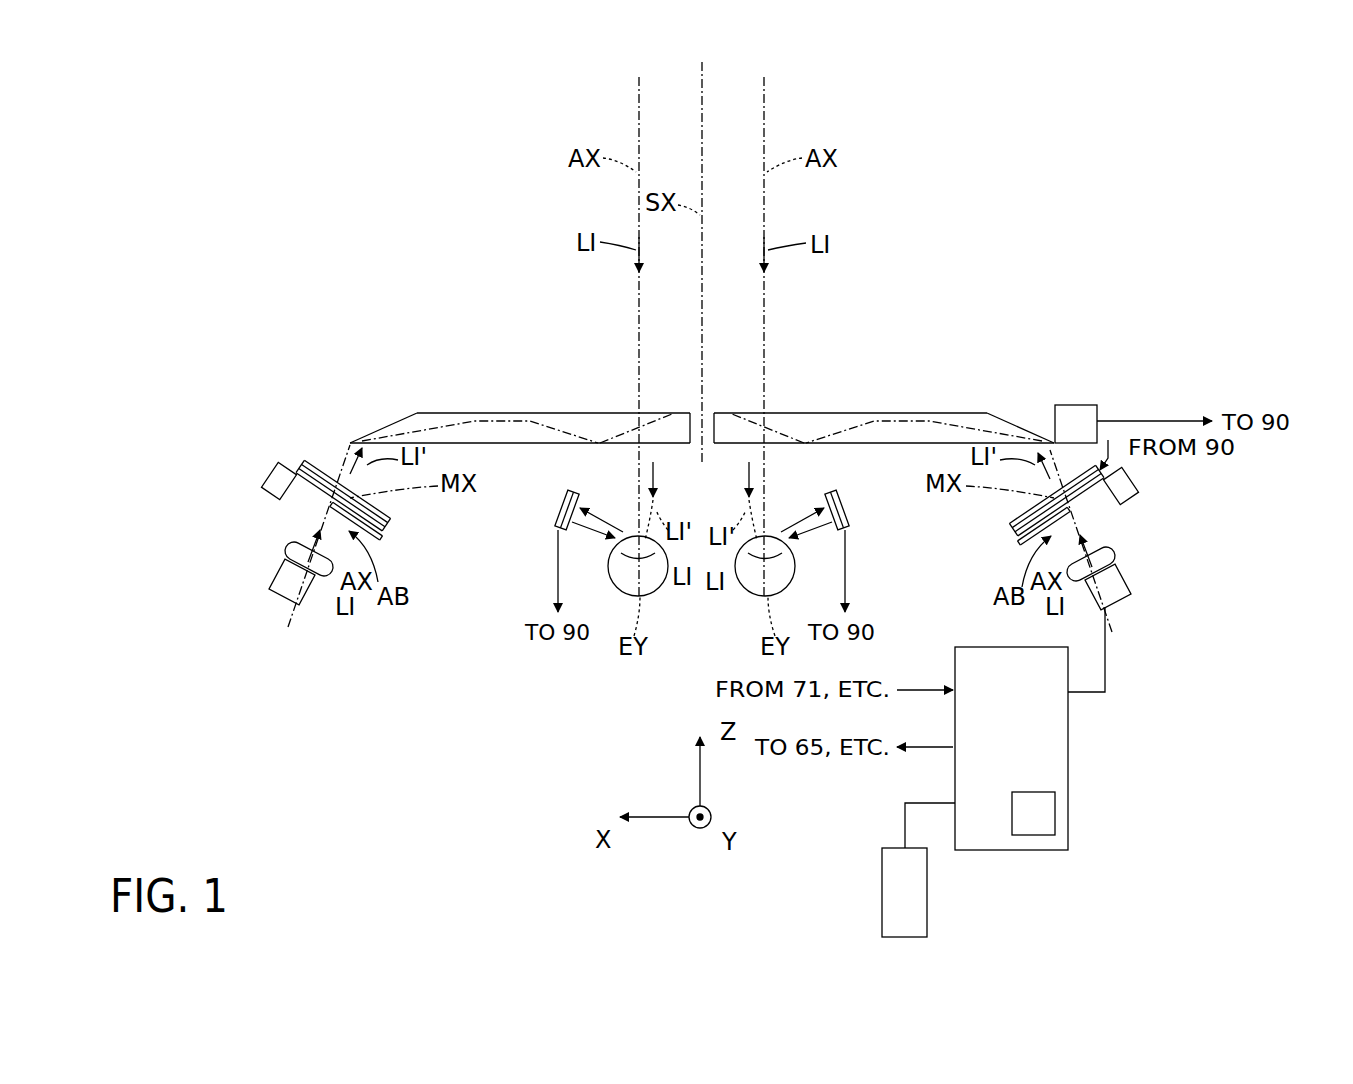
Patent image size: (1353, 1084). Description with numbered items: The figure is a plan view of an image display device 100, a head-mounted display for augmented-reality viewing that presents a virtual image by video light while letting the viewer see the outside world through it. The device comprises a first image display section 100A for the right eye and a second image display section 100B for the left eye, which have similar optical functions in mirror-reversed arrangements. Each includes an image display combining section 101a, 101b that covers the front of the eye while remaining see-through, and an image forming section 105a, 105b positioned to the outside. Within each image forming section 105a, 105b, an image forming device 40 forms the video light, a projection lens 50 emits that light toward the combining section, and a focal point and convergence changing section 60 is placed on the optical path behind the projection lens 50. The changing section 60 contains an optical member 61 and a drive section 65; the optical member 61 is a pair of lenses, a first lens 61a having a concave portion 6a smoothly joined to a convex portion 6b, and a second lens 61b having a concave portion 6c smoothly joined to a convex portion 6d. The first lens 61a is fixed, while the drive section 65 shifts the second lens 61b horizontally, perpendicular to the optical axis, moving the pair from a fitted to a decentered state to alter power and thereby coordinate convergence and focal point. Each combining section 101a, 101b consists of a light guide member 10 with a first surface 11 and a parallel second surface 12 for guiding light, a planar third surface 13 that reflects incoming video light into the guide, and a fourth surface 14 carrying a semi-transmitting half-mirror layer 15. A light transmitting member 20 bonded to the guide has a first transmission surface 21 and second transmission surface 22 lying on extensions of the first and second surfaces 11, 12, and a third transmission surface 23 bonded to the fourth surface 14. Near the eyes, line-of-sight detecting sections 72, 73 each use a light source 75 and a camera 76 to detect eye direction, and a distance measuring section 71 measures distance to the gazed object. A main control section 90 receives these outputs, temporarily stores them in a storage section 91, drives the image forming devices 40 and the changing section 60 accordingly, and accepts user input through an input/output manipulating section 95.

The image display device 100 is at (1296, 175).
The first image display section 100A is at (990, 355).
The second image display section 100B is at (422, 355).
The first image display combining section 101a is at (893, 355).
The second image display combining section 101b is at (510, 355).
The first image forming section 105a is at (1195, 513).
The second image forming section 105b is at (200, 506).
The light guide member 10 is at (702, 423).
The first surface 11 is at (505, 445).
The second surface 12 is at (478, 412).
The third surface 13 is at (395, 428).
The fourth surface 14 is at (702, 394).
The half-mirror layer 15 is at (616, 412).
The light transmitting member 20 is at (702, 412).
The first transmission surface 21 is at (688, 445).
The second transmission surface 22 is at (683, 412).
The third transmission surface 23 is at (618, 445).
The image forming device 40 is at (303, 610).
The projection lens 50 is at (283, 548).
The focal point and convergence changing section 60 is at (723, 452).
The concave portion 6a is at (330, 466).
The convex portion 6b is at (357, 484).
The concave portion 6c is at (336, 506).
The convex portion 6d is at (309, 463).
The optical member 61 is at (700, 522).
The first lens 61a is at (374, 511).
The second lens 61b is at (382, 524).
The drive section 65 is at (262, 481).
The distance measuring section 71 is at (1085, 413).
The line-of-sight detecting section 72 is at (843, 532).
The line-of-sight detecting section 73 is at (560, 530).
The light source 75 is at (598, 537).
The camera 76 is at (565, 498).
The main control section 90 is at (1030, 762).
The storage section 91 is at (1050, 820).
The input/output manipulating section 95 is at (890, 886).